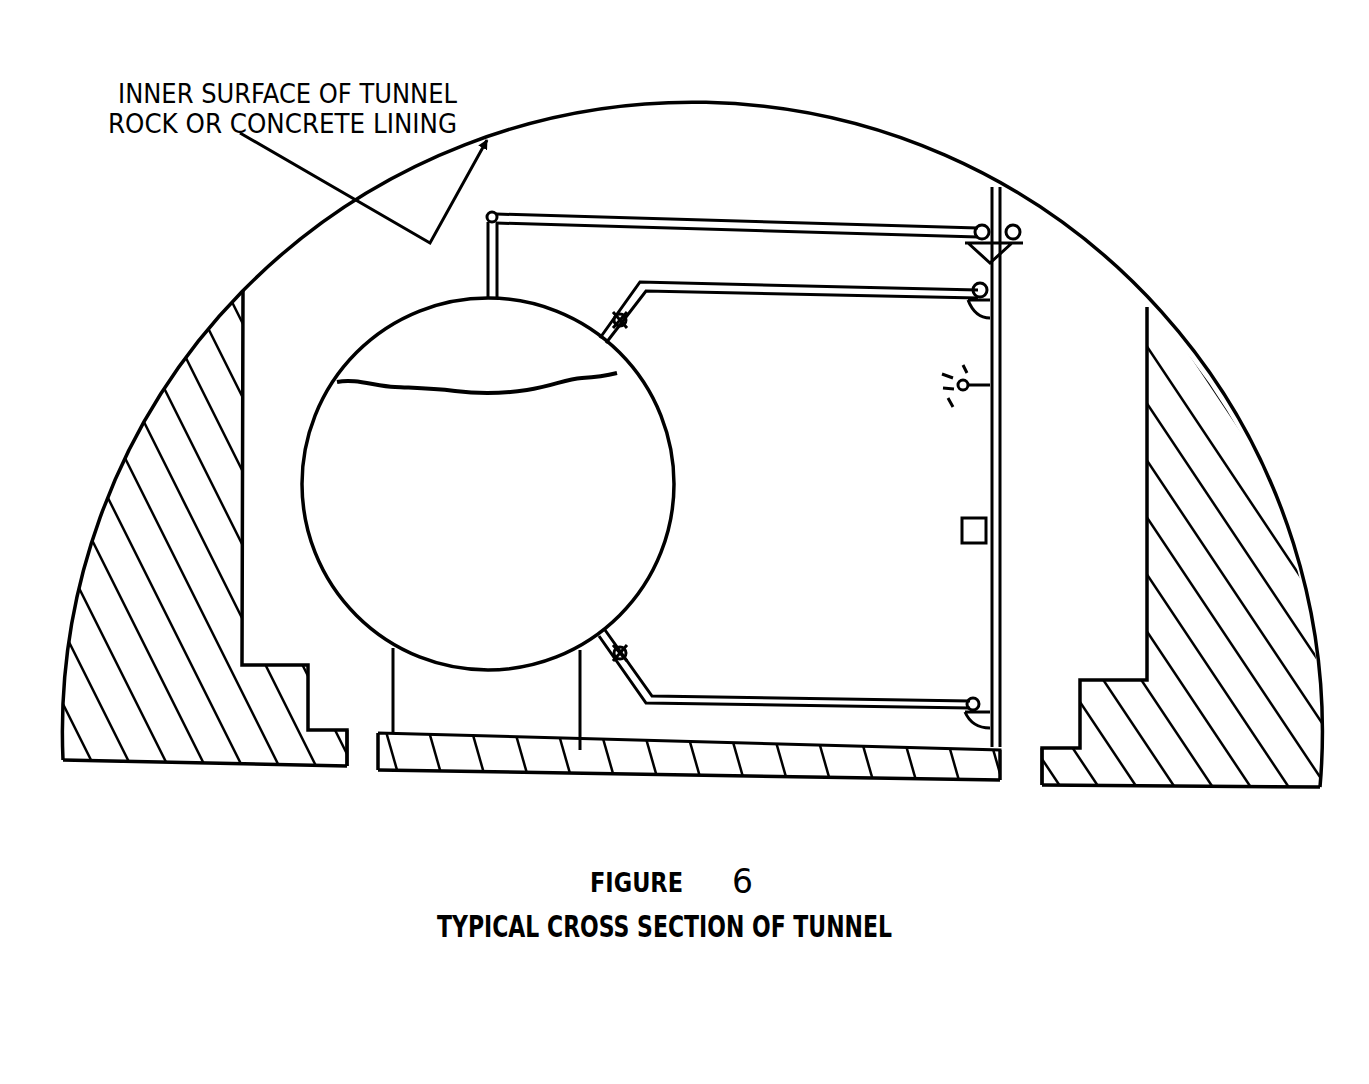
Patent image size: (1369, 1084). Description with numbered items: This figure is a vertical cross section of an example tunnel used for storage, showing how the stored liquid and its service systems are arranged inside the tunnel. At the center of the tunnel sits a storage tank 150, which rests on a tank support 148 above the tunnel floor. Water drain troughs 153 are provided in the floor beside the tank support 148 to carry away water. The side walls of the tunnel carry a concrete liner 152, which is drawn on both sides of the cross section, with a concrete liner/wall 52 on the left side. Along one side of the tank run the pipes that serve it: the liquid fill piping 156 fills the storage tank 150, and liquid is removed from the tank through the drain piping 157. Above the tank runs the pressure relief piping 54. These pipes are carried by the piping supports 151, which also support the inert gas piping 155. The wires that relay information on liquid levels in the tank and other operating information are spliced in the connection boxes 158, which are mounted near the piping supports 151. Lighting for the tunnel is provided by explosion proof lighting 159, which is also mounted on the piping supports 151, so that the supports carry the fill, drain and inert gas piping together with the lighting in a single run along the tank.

The concrete liner/wall 52 is at (291, 530).
The pressure relief piping 54 is at (882, 224).
The tank support 148 is at (368, 640).
The storage tank 150 is at (357, 347).
The piping supports 151 is at (1003, 313).
The concrete liner 152 is at (1014, 547).
The water drain troughs 153 is at (363, 750).
The inert gas piping 155 is at (1025, 222).
The liquid fill piping 156 is at (700, 302).
The drain piping 157 is at (694, 690).
The connection boxes 158 is at (958, 538).
The explosion proof lighting 159 is at (942, 378).